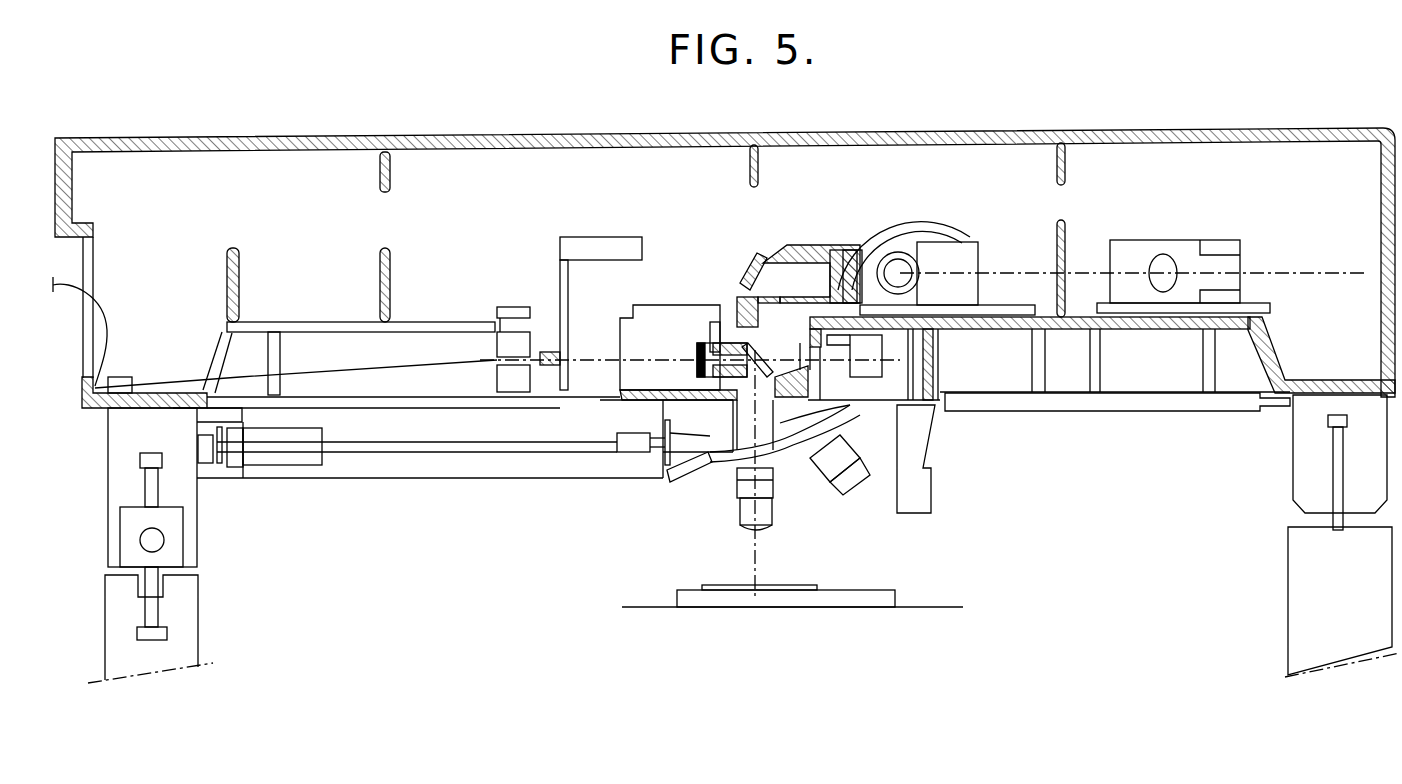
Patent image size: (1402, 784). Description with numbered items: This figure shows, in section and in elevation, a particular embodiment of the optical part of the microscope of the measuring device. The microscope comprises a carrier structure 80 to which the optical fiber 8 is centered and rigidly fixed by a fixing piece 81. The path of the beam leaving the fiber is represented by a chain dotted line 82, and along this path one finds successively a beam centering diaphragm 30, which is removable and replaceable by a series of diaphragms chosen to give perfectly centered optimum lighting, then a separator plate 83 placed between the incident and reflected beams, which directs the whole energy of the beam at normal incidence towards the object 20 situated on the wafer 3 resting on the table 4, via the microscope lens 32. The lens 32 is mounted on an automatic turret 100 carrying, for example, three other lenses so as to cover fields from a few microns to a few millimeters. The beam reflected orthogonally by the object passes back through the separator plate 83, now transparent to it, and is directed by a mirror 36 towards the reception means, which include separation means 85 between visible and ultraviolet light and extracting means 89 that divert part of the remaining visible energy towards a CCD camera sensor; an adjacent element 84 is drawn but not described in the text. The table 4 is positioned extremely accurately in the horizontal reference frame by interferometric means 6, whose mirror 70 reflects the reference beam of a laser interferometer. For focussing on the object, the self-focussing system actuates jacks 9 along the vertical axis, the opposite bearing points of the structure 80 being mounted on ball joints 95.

The carrier structure 80 is at (912, 138).
The optical fiber 8 is at (352, 368).
The fixing piece 81 is at (505, 350).
The beam centering diaphragm 30 is at (563, 348).
The chain dotted line 82 is at (652, 357).
The separator plate 83 is at (750, 342).
The mirror 36 is at (753, 268).
The lens 84 is at (843, 265).
The separation means 85 is at (953, 257).
The extracting means 89 is at (1173, 245).
The interferometric means 6 is at (853, 372).
The mirror 70 is at (910, 485).
The automatic turret 100 is at (743, 463).
The microscope lens 32 is at (757, 463).
The object 20 is at (750, 582).
The wafer 3 is at (805, 583).
The table 4 is at (880, 595).
The jacks 9 is at (1312, 455).
The ball joints 95 is at (165, 562).